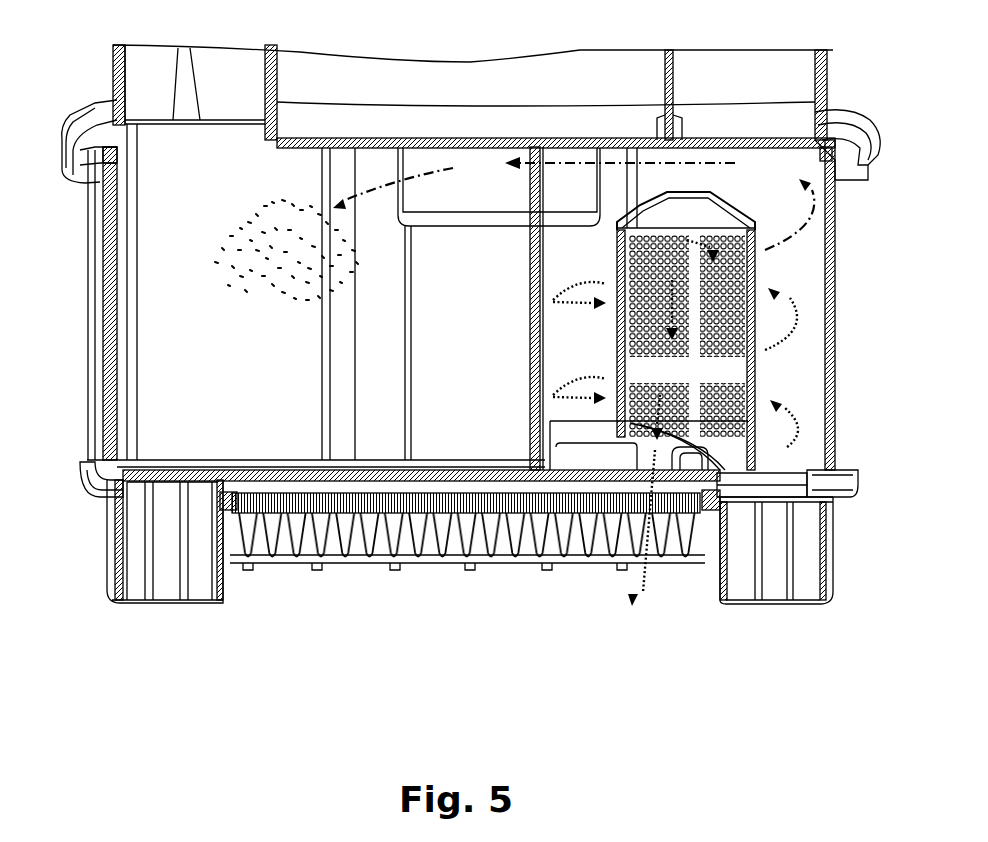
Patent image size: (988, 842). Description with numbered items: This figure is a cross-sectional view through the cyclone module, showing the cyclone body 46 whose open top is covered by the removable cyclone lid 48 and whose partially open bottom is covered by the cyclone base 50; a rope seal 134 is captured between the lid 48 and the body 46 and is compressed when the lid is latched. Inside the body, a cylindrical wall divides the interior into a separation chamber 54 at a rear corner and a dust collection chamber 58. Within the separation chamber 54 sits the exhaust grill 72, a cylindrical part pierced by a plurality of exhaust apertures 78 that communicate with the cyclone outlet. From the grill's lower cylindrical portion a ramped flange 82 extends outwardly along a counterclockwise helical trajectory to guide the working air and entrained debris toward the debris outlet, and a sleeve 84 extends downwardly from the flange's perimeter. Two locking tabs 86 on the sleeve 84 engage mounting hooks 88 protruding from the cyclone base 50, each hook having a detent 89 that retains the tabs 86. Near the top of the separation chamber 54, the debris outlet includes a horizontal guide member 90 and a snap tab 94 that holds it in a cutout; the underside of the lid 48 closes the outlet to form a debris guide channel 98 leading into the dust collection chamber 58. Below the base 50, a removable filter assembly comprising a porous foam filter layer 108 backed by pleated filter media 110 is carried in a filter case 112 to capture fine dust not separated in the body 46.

The cyclone body 46 is at (97, 327).
The cyclone lid 48 is at (840, 110).
The cyclone base 50 is at (833, 530).
The separation chamber 54 is at (783, 375).
The dust collection chamber 58 is at (213, 405).
The exhaust grill 72 is at (705, 200).
The exhaust apertures 78 is at (753, 280).
The ramped flange 82 is at (765, 468).
The sleeve 84 is at (470, 567).
The locking tabs 86 is at (673, 467).
The mounting hooks 88 is at (722, 468).
The detent 89 is at (660, 470).
The horizontal guide member 90 is at (446, 230).
The snap tab 94 is at (528, 272).
The debris guide channel 98 is at (476, 195).
The porous foam filter layer 108 is at (303, 515).
The pleated filter media 110 is at (372, 547).
The filter case 112 is at (256, 567).
The rope seal 134 is at (110, 153).